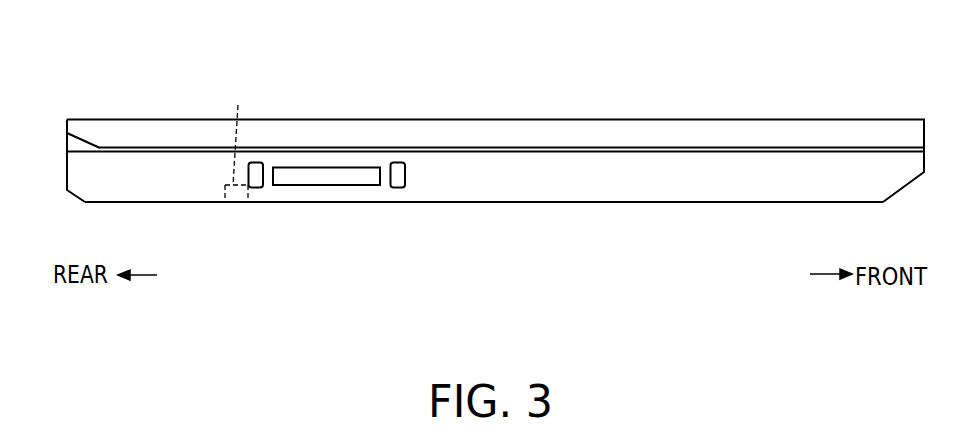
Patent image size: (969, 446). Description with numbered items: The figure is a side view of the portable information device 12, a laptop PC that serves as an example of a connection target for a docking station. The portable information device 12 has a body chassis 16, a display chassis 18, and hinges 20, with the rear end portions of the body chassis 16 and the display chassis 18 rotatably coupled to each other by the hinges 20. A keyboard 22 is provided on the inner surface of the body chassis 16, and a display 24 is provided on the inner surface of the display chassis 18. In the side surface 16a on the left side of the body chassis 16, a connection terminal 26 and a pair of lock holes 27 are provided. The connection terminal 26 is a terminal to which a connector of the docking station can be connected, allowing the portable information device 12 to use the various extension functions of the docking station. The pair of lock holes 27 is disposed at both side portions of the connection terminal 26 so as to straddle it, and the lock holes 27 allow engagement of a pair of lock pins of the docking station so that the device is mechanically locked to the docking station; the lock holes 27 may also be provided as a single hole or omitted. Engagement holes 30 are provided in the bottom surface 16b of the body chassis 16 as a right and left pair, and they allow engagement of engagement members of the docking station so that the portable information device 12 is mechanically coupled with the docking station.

The portable information device 12 is at (81, 50).
The body chassis 16 is at (658, 193).
The side surface 16a is at (480, 193).
The bottom surface 16b is at (733, 203).
The display chassis 18 is at (683, 130).
The hinges 20 is at (66, 141).
The keyboard 22 is at (526, 150).
The display 24 is at (560, 152).
The connection terminal 26 is at (323, 182).
The lock holes 27 is at (262, 180).
The engagement holes 30 is at (237, 140).